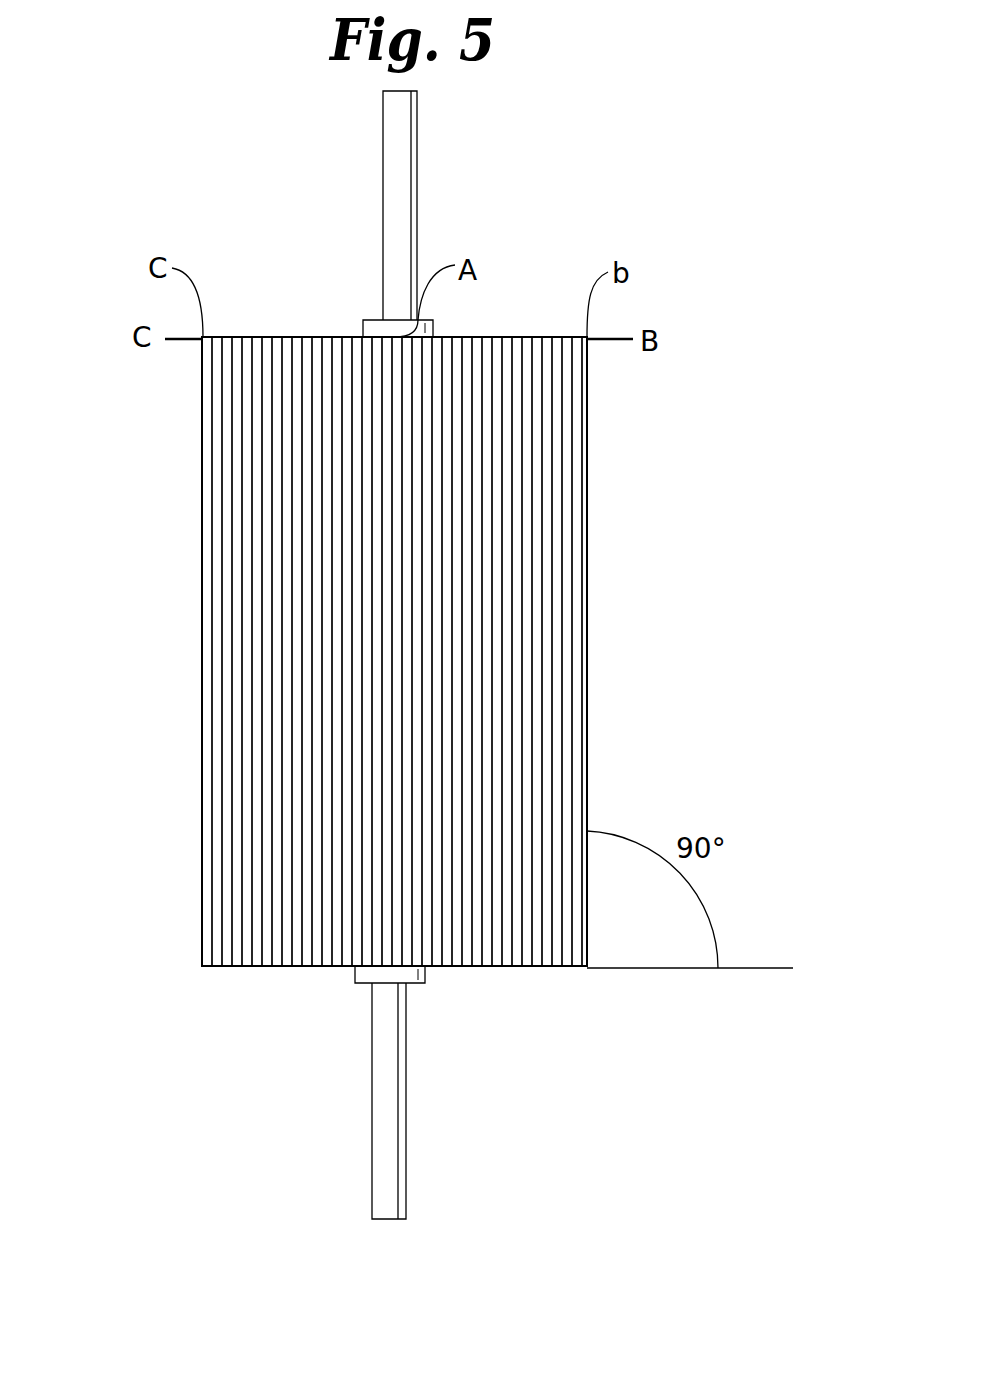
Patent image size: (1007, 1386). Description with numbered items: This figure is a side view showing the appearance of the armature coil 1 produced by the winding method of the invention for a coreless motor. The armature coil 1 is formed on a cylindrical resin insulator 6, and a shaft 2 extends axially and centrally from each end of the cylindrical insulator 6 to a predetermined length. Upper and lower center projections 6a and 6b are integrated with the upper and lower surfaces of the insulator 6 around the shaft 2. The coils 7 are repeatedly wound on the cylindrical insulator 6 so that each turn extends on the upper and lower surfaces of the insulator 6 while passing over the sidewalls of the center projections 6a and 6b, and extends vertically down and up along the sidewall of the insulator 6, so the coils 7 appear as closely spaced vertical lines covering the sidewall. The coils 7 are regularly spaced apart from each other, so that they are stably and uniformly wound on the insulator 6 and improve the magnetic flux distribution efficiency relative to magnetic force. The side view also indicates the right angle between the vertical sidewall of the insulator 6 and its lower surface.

The rotor assembly 1 is at (197, 988).
The shaft 2 is at (419, 225).
The cylindrical resin insulator 6 is at (283, 722).
The upper center projection 6a is at (363, 320).
The lower center projection 6b is at (407, 978).
The coil 7 is at (513, 732).